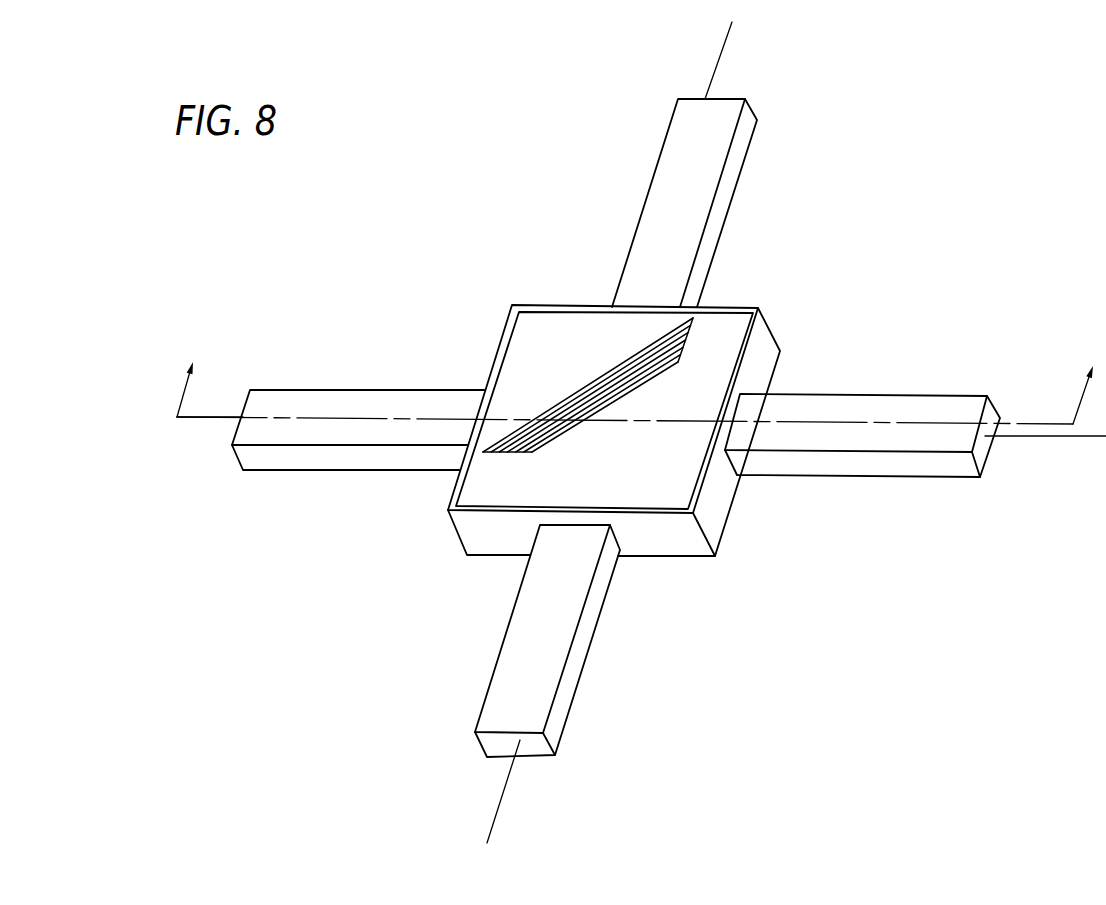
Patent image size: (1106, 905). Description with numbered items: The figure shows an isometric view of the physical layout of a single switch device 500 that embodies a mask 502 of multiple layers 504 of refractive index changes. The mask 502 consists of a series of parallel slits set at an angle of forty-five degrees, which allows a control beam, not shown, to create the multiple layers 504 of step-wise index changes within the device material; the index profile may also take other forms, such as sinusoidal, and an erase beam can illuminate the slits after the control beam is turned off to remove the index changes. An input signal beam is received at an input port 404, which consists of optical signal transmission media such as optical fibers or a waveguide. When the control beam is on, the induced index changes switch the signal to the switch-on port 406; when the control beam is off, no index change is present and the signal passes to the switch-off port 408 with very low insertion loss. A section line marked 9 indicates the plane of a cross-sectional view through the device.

The single switch device 500 is at (517, 168).
The mask 502 is at (577, 332).
The multiple layers 504 is at (587, 395).
The input port 404 is at (580, 647).
The switch-on port 406 is at (922, 393).
The switch-off port 408 is at (718, 207).
The section line 9- 9 is at (641, 384).